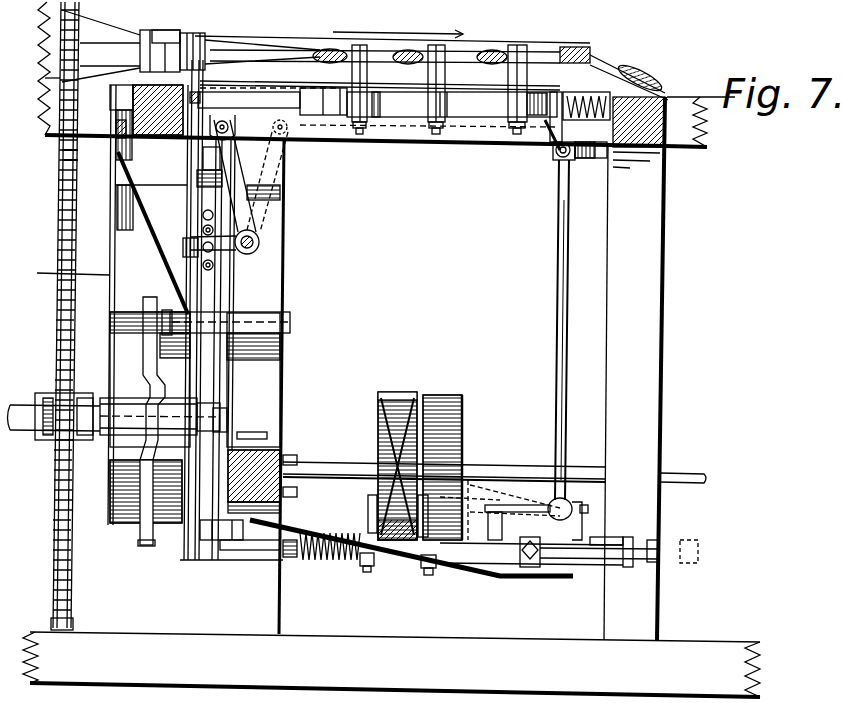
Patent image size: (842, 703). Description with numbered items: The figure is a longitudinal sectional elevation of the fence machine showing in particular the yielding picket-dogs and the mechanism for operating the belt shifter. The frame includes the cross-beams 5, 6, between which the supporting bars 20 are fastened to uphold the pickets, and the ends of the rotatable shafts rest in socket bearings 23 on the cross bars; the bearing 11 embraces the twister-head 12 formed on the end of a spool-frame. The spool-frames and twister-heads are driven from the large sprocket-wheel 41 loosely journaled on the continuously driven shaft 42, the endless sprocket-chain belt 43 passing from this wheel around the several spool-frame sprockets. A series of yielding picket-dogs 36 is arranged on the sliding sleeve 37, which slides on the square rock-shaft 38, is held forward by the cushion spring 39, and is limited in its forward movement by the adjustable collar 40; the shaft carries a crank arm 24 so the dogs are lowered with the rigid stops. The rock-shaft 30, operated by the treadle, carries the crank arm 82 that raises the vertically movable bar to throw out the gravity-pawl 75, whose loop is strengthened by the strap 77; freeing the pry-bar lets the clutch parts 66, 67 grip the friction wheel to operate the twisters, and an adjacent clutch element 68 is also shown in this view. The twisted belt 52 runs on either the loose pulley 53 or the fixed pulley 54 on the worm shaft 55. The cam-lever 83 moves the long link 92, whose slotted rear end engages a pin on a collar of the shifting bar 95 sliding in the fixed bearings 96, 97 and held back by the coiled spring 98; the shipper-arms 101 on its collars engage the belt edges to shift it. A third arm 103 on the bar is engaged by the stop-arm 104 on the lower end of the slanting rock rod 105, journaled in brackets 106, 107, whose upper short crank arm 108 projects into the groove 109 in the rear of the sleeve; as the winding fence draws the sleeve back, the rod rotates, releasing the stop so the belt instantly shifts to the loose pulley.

The cross-beam 5 is at (180, 140).
The cross-beam 6 is at (667, 148).
The bearing 11 is at (168, 30).
The twister-head 12 is at (192, 42).
The supporting bar 20 is at (580, 47).
The socket bearing 23 is at (610, 95).
The crank arm 24 is at (118, 124).
The rock-shaft 30 is at (258, 242).
The yielding picket-dog 36 is at (516, 47).
The sliding sleeve 37 is at (476, 106).
The square rock-shaft 38 is at (275, 102).
The cushion spring 39 is at (586, 95).
The adjustable collar 40 is at (312, 117).
The large sprocket-wheel 41 is at (55, 520).
The shaft 42 is at (28, 412).
The endless sprocket-chain belt 43 is at (60, 166).
The twisted belt 52 is at (395, 423).
The loose pulley 53 is at (453, 397).
The fixed pulley 54 is at (385, 418).
The shaft 55 is at (507, 463).
The clutch part 66 is at (150, 378).
The clutch part 67 is at (118, 495).
The hub 68 is at (144, 530).
The gravity-pawl 75 is at (182, 265).
The strap 77 is at (152, 233).
The crank arm 82 is at (228, 248).
The cam-lever 83 is at (207, 390).
The long link 92 is at (410, 550).
The shifting bar 95 is at (597, 548).
The fixed bearing 96 is at (637, 537).
The fixed bearing 97 is at (293, 517).
The coiled spring 98 is at (318, 557).
The shipper-arm 101 is at (380, 516).
The third arm 103 is at (503, 519).
The stop-arm 104 is at (547, 503).
The slanting rock rod 105 is at (568, 382).
The bracket 106 is at (627, 540).
The bracket 107 is at (593, 170).
The short crank arm 108 is at (558, 162).
The groove 109 is at (538, 143).